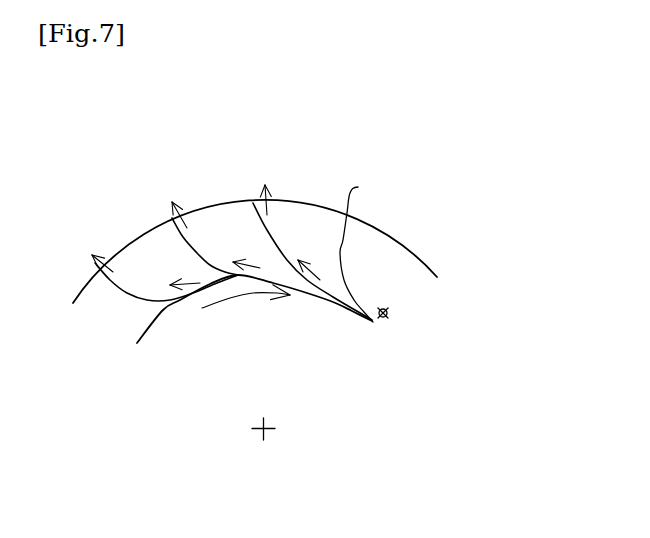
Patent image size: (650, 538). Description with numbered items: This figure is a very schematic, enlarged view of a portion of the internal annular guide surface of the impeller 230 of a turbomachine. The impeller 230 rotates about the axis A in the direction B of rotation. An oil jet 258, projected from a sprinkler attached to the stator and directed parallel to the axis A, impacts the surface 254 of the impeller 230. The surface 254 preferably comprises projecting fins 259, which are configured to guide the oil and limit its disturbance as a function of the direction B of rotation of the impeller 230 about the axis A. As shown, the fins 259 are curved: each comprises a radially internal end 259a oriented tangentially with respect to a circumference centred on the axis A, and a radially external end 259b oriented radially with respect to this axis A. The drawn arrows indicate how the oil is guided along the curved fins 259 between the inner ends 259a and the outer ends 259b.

The impeller 230 is at (332, 163).
The surface 254 is at (302, 230).
The oil jet 258 is at (388, 313).
The fins 259 is at (145, 268).
The radially internal end 259a is at (372, 320).
The radially external end 259b is at (358, 187).
The axis A is at (263, 429).
The direction of rotation B is at (245, 293).